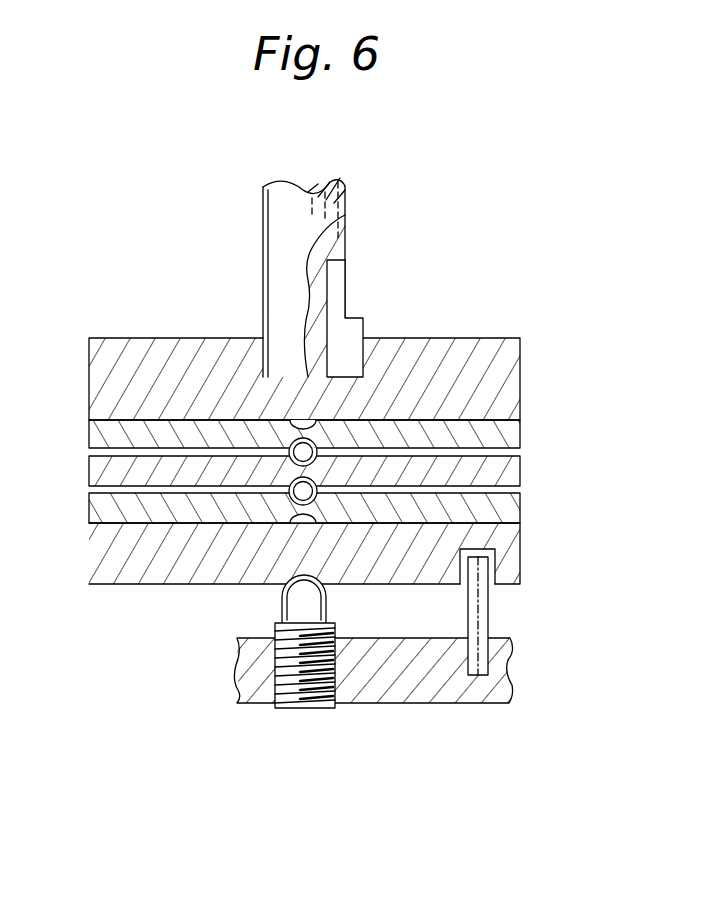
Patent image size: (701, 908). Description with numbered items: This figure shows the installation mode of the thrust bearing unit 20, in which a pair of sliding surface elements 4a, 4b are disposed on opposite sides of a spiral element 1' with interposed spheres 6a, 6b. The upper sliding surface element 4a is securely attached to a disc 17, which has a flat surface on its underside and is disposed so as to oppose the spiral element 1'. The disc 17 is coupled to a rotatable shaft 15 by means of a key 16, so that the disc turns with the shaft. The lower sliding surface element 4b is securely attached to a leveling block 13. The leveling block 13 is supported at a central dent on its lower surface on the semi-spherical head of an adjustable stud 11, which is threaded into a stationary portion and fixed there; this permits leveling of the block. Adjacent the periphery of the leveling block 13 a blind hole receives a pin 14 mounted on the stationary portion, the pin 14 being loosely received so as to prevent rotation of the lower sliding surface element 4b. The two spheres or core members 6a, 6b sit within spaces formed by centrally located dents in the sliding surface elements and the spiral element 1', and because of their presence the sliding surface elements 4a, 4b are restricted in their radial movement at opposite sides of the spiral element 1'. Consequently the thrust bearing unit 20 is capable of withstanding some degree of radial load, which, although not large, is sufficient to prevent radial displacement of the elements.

The rotatable shaft 15 is at (333, 204).
The key 16 is at (345, 330).
The disc 17 is at (442, 347).
The upper sliding surface element 4a is at (514, 438).
The spiral element 1' is at (306, 466).
The lower sliding surface element 4b is at (329, 514).
The thrust bearing unit 20 is at (331, 476).
The sphere 6a is at (299, 457).
The sphere 6b is at (300, 494).
The leveling block 13 is at (516, 560).
The pin 14 is at (483, 617).
The adjustable stud 11 is at (298, 703).